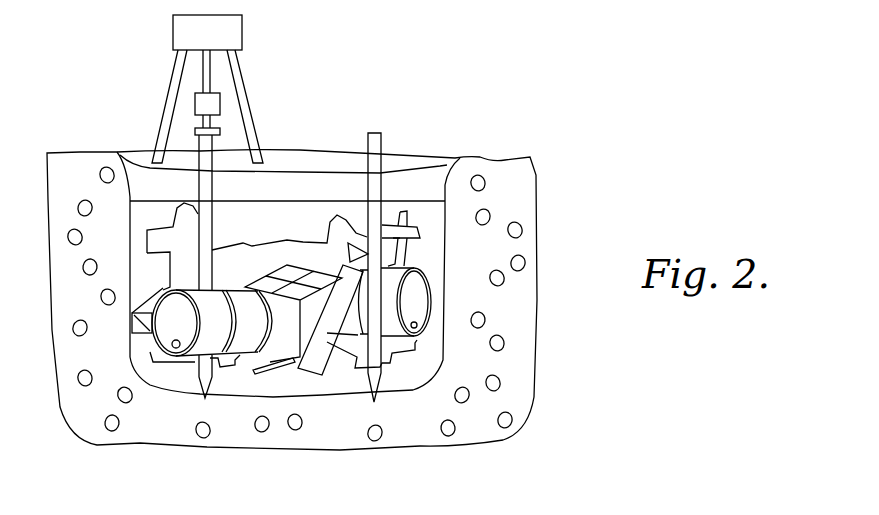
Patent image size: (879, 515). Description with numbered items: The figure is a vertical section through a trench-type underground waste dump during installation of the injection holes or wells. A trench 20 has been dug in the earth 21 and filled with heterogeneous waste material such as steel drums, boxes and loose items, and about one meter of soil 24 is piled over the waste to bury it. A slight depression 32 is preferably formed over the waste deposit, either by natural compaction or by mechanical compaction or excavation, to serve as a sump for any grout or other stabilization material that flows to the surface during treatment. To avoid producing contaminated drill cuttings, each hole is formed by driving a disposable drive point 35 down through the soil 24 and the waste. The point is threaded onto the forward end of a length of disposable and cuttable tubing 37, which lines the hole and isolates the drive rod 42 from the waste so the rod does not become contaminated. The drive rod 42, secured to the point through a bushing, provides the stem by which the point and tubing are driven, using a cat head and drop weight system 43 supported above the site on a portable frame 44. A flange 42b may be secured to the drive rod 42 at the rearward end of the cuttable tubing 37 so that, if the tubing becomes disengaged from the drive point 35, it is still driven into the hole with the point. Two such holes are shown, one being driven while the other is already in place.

The trench 20 is at (447, 293).
The earth 21 is at (528, 208).
The soil 24 is at (440, 176).
The slight depression 32 is at (396, 158).
The disposable drive point 35 is at (203, 398).
The disposable and cuttable tubing 37 is at (207, 147).
The drive rod 42 is at (205, 125).
The flange 42b is at (195, 132).
The cat head and drop weight system 43 is at (242, 32).
The portable frame 44 is at (180, 68).